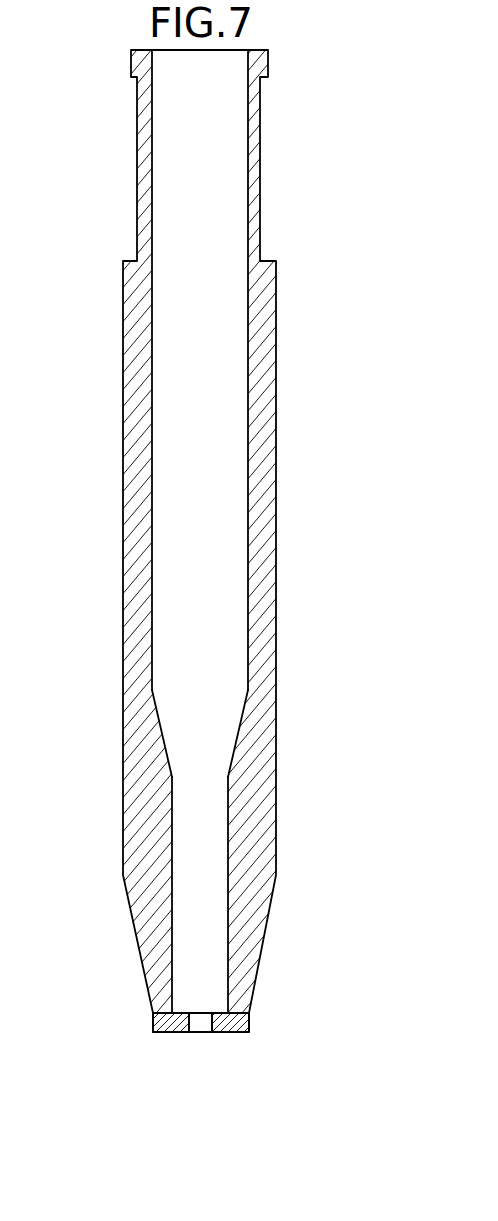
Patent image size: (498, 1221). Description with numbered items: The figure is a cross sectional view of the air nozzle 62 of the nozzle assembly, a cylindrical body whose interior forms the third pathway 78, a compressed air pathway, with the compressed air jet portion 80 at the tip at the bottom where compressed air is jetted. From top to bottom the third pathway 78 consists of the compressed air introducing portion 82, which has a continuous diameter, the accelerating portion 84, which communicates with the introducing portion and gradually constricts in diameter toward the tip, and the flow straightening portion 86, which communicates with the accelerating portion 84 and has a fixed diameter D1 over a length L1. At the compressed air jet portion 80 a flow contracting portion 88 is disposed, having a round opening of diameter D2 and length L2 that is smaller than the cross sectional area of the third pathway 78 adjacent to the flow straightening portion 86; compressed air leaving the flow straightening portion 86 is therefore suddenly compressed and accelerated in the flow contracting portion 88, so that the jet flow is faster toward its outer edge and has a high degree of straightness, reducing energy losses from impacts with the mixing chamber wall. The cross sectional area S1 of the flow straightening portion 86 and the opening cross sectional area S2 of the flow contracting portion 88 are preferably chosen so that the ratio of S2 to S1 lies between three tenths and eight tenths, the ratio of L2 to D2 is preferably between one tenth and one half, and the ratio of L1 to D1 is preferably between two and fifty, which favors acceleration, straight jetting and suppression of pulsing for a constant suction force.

The air nozzle 62 is at (277, 151).
The compressed air introducing portion 82 is at (198, 322).
The third pathway 78 is at (199, 379).
The accelerating portion 84 is at (200, 740).
The cross sectional area of the flow straightening portion S1 is at (190, 785).
The flow straightening portion 86 is at (200, 850).
The flow contracting portion 88 is at (160, 1022).
The cross sectional area of the opening in the flow contracting portion S2 is at (200, 1032).
The compressed air jet portion 80 is at (204, 1033).
The diameter of the flow straightening portion D1 is at (228, 777).
The opening diameter of the flow contracting portion D2 is at (212, 1032).
The length of the flow straightening portion L1 is at (277, 784).
The opening length of the flow contracting portion L2 is at (292, 975).